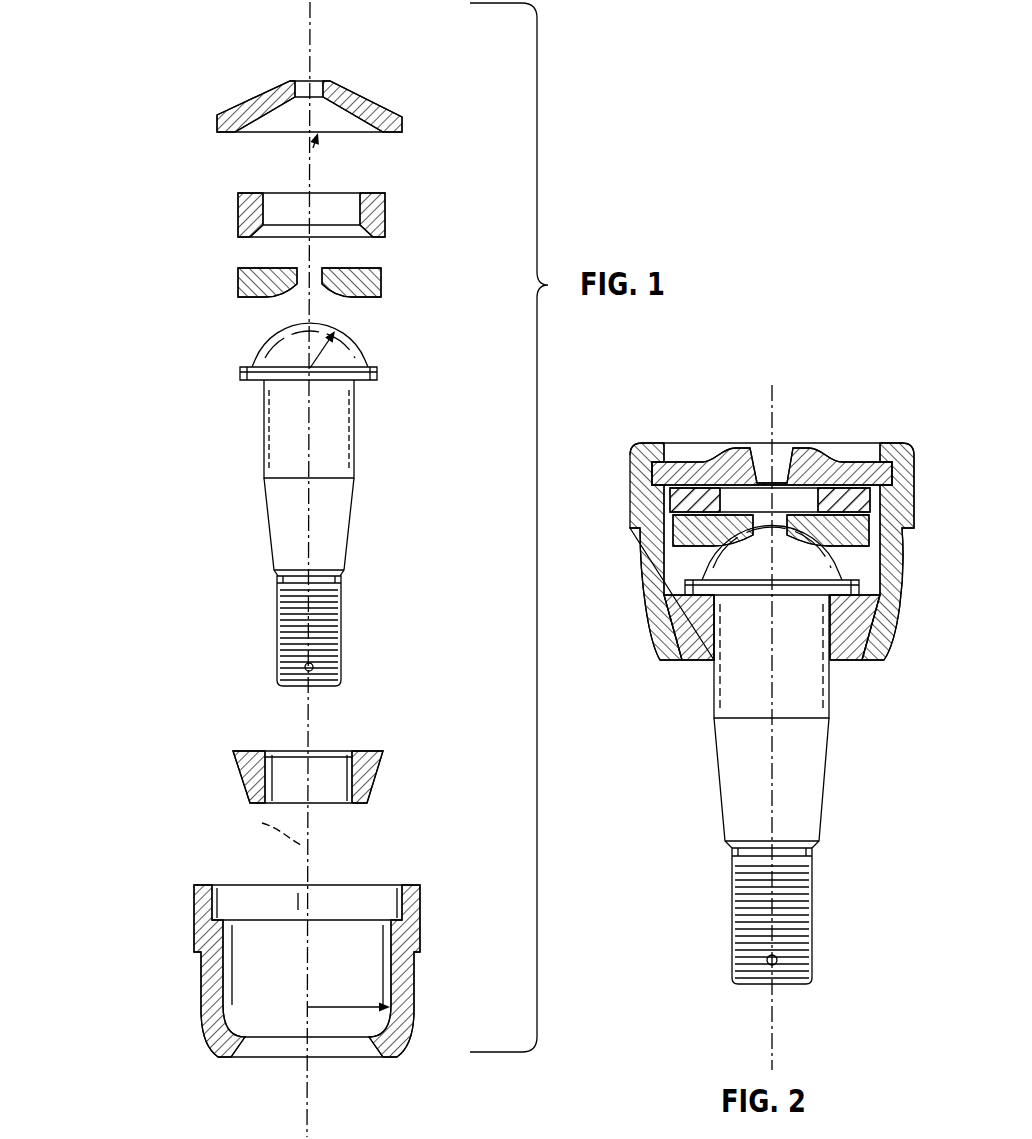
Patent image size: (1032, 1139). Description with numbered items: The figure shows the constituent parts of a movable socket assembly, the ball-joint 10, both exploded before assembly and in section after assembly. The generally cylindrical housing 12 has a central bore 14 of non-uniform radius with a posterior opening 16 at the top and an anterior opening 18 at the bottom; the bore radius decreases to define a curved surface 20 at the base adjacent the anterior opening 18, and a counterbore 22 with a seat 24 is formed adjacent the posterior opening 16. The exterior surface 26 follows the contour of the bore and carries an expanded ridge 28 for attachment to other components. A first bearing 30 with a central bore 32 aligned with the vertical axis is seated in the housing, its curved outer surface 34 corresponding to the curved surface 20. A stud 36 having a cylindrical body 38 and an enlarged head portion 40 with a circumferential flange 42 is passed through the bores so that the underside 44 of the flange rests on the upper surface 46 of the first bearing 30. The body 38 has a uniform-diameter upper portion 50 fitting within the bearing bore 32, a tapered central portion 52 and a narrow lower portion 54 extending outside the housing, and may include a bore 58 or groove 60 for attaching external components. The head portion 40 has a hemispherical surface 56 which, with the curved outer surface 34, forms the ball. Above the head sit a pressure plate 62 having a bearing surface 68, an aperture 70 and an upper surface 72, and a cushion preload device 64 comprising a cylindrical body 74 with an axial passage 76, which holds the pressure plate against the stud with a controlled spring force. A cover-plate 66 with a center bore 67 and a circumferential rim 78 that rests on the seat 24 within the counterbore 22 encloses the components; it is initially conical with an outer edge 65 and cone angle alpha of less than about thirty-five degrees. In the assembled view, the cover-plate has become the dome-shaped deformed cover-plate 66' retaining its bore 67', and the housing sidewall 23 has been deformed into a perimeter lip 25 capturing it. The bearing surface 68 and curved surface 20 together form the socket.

In FIG. 1, the ball-joint 10 is at (110, 375).
In FIG. 1, the housing 12 is at (420, 990).
In FIG. 2, the housing 12 is at (911, 640).
In FIG. 1, the central bore 14 is at (353, 935).
In FIG. 1, the posterior opening 16 is at (329, 892).
In FIG. 1, the anterior opening 18 is at (334, 1066).
In FIG. 1, the curved surface 20 is at (380, 1026).
In FIG. 1, the counterbore 22 is at (389, 910).
In FIG. 1, the sidewall 23 is at (412, 913).
In FIG. 2, the sidewall 23 is at (903, 472).
In FIG. 1, the seat 24 is at (229, 910).
In FIG. 2, the deformed perimeter lip 25 is at (880, 450).
In FIG. 1, the exterior surface 26 is at (195, 1000).
In FIG. 1, the expanded ridge 28 is at (188, 940).
In FIG. 2, the expanded ridge 28 is at (640, 525).
In FIG. 1, the first bearing 30 is at (388, 763).
In FIG. 2, the first bearing 30 is at (692, 628).
In FIG. 1, the central bore 32 is at (328, 792).
In FIG. 1, the curved outer surface 34 is at (234, 773).
In FIG. 1, the stud 36 is at (257, 455).
In FIG. 1, the cylindrical body 38 is at (405, 380).
In FIG. 1, the head portion 40 is at (361, 341).
In FIG. 2, the head portion 40 is at (702, 556).
In FIG. 1, the circumferential flange 42 is at (386, 372).
In FIG. 1, the underside 44 is at (244, 387).
In FIG. 1, the upper surface 46 is at (373, 746).
In FIG. 2, the upper surface 46 is at (884, 600).
In FIG. 1, the upper portion 50 is at (366, 430).
In FIG. 2, the upper portion 50 is at (830, 690).
In FIG. 1, the central portion 52 is at (361, 528).
In FIG. 2, the central portion 52 is at (822, 790).
In FIG. 1, the lower portion 54 is at (346, 612).
In FIG. 2, the lower portion 54 is at (813, 905).
In FIG. 1, the hemispherical surface 56 is at (263, 329).
In FIG. 1, the bore 58 is at (318, 664).
In FIG. 2, the bore 58 is at (812, 958).
In FIG. 1, the groove 60 is at (277, 655).
In FIG. 2, the groove 60 is at (731, 912).
In FIG. 1, the pressure plate 62 is at (395, 297).
In FIG. 2, the pressure plate 62 is at (874, 558).
In FIG. 1, the preload device 64 is at (395, 218).
In FIG. 2, the preload device 64 is at (876, 502).
In FIG. 1, the cap outer edge 65 is at (403, 128).
In FIG. 2, the cap outer edge 65 is at (652, 472).
In FIG. 1, the cover-plate 66 is at (306, 89).
In FIG. 2, the deformed cover-plate 66' is at (748, 415).
In FIG. 1, the bore 67 is at (306, 89).
In FIG. 2, the bore 67' is at (742, 415).
In FIG. 1, the bearing surface 68 is at (272, 300).
In FIG. 1, the aperture 70 is at (318, 272).
In FIG. 1, the upper surface 72 is at (256, 269).
In FIG. 1, the cylindrical body 74 is at (244, 189).
In FIG. 1, the axial passage 76 is at (337, 207).
In FIG. 1, the circumferential rim 78 is at (206, 123).